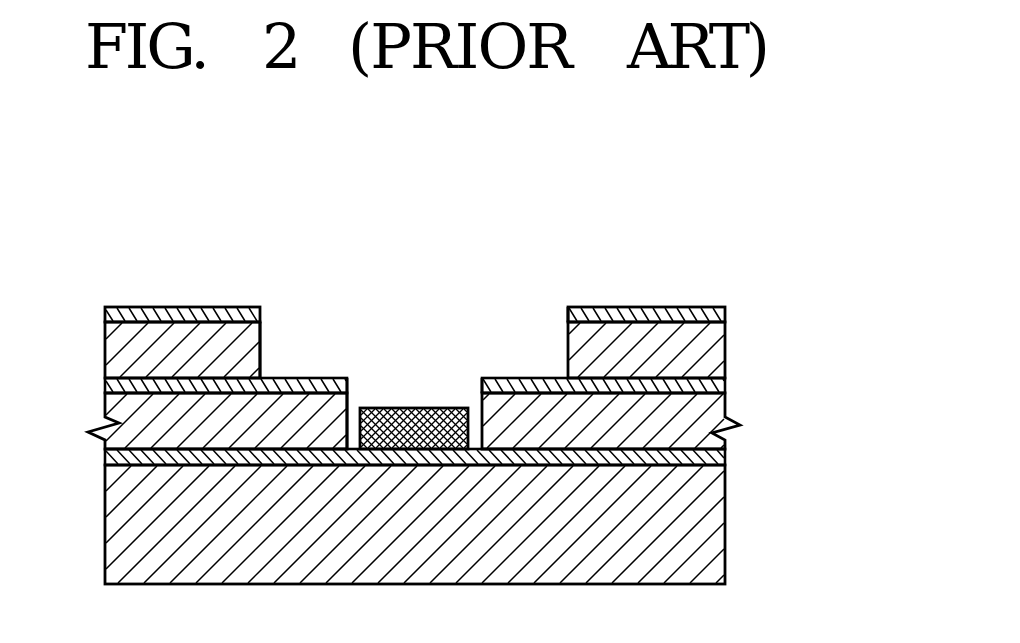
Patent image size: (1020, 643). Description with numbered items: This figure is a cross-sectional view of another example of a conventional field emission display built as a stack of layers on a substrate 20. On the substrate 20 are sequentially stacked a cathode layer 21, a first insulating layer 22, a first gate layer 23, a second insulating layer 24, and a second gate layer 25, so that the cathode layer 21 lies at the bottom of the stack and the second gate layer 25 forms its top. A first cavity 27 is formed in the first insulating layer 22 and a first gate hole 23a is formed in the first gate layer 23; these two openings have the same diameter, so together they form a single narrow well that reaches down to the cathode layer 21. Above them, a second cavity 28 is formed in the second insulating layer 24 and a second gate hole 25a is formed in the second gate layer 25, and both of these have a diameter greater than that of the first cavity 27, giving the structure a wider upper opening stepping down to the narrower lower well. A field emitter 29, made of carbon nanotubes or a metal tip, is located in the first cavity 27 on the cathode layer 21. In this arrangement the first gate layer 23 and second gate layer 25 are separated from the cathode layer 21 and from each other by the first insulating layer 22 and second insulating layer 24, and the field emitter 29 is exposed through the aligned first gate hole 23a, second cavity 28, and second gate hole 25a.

The substrate 20 is at (718, 518).
The cathode layer 21 is at (726, 458).
The first insulating layer 22 is at (740, 425).
The first gate layer 23 is at (726, 389).
The second insulating layer 24 is at (726, 348).
The second gate layer 25 is at (726, 316).
The first cavity 27 is at (352, 412).
The second cavity 28 is at (260, 348).
The field emitter 29 is at (407, 407).
The first gate hole 23a is at (482, 378).
The second gate hole 25a is at (566, 308).